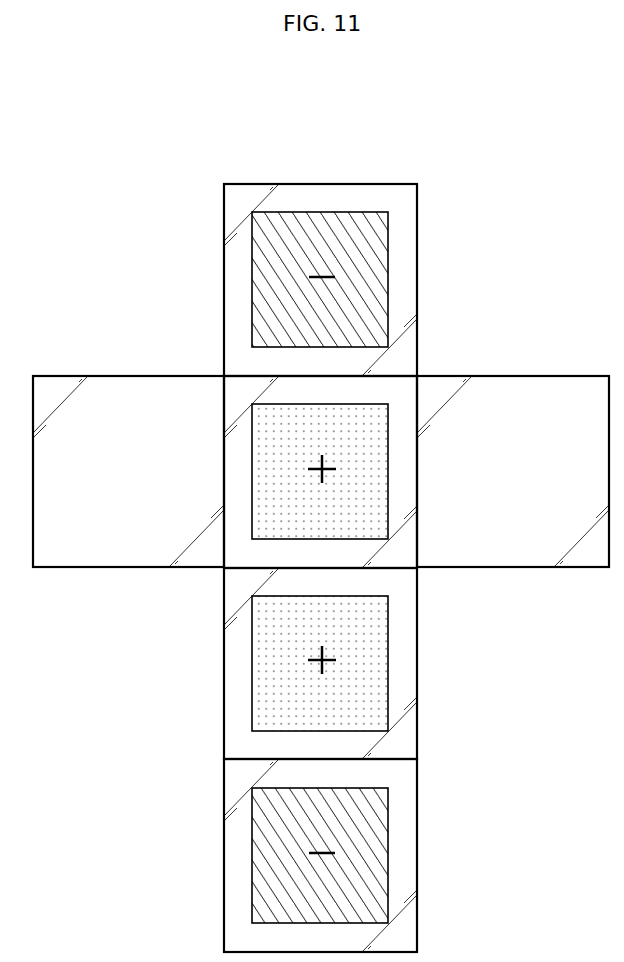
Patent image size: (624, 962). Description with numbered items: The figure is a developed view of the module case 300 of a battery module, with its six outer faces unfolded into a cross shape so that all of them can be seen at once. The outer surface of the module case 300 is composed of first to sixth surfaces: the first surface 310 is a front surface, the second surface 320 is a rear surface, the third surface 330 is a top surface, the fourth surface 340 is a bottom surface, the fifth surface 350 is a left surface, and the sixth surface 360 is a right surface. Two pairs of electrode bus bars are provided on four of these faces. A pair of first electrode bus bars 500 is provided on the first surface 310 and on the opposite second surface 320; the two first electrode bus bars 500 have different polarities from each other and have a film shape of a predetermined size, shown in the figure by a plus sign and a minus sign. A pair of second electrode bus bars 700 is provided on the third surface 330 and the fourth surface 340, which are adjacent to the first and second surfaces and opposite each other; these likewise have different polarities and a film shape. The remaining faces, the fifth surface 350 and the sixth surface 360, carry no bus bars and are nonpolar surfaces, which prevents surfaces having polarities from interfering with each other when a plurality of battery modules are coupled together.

The module case 300 is at (106, 121).
The first surface 310 is at (403, 390).
The second surface 320 is at (405, 860).
The third surface 330 is at (405, 197).
The fourth surface 340 is at (405, 668).
The fifth surface 350 is at (137, 385).
The sixth surface 360 is at (543, 385).
The first electrode bus bars 500 is at (262, 440).
The second electrode bus bars 700 is at (378, 247).